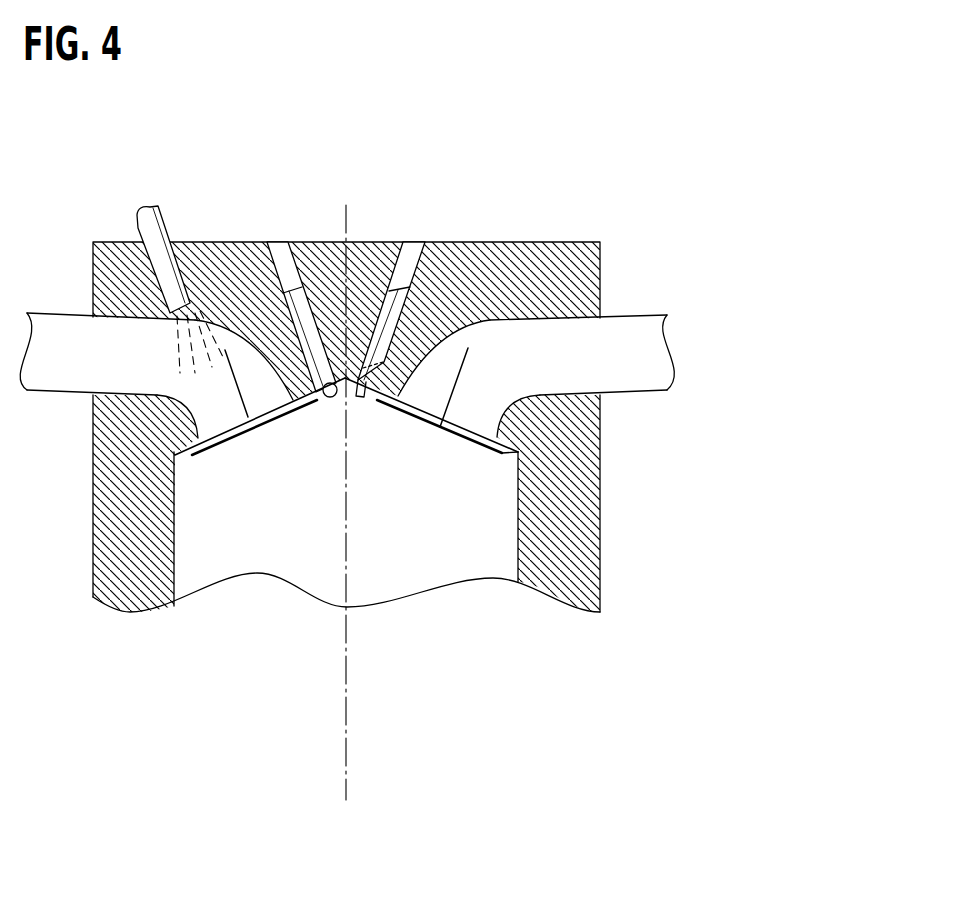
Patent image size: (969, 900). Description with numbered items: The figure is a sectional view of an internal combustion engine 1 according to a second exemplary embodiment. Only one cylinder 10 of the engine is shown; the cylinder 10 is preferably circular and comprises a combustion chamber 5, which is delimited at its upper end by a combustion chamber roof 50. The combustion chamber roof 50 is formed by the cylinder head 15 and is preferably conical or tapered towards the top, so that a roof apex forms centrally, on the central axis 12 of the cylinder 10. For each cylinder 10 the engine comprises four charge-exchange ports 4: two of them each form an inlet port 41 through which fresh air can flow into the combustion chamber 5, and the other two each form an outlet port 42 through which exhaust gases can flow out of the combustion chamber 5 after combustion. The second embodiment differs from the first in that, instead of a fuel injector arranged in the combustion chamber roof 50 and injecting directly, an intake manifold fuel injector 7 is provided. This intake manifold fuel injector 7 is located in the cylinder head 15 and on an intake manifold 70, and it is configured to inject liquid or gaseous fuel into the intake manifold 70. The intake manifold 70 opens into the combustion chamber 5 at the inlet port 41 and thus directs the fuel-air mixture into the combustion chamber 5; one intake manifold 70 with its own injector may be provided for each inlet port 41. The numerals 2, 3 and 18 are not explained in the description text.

The internal combustion engine 1 is at (574, 153).
The second fuel injector 2 is at (383, 323).
The first fuel injector 3 is at (303, 320).
The charge-exchange port 4 is at (279, 421).
The combustion chamber 5 is at (280, 528).
The intake manifold fuel injector 7 is at (148, 228).
The cylinder 10 is at (540, 507).
The central axis 12 is at (346, 753).
The cylinder head 15 is at (327, 278).
The exhaust duct 18 is at (630, 352).
The inlet port 41 is at (218, 422).
The outlet port 42 is at (465, 417).
The combustion chamber roof 50 is at (510, 459).
The intake manifold 70 is at (58, 368).